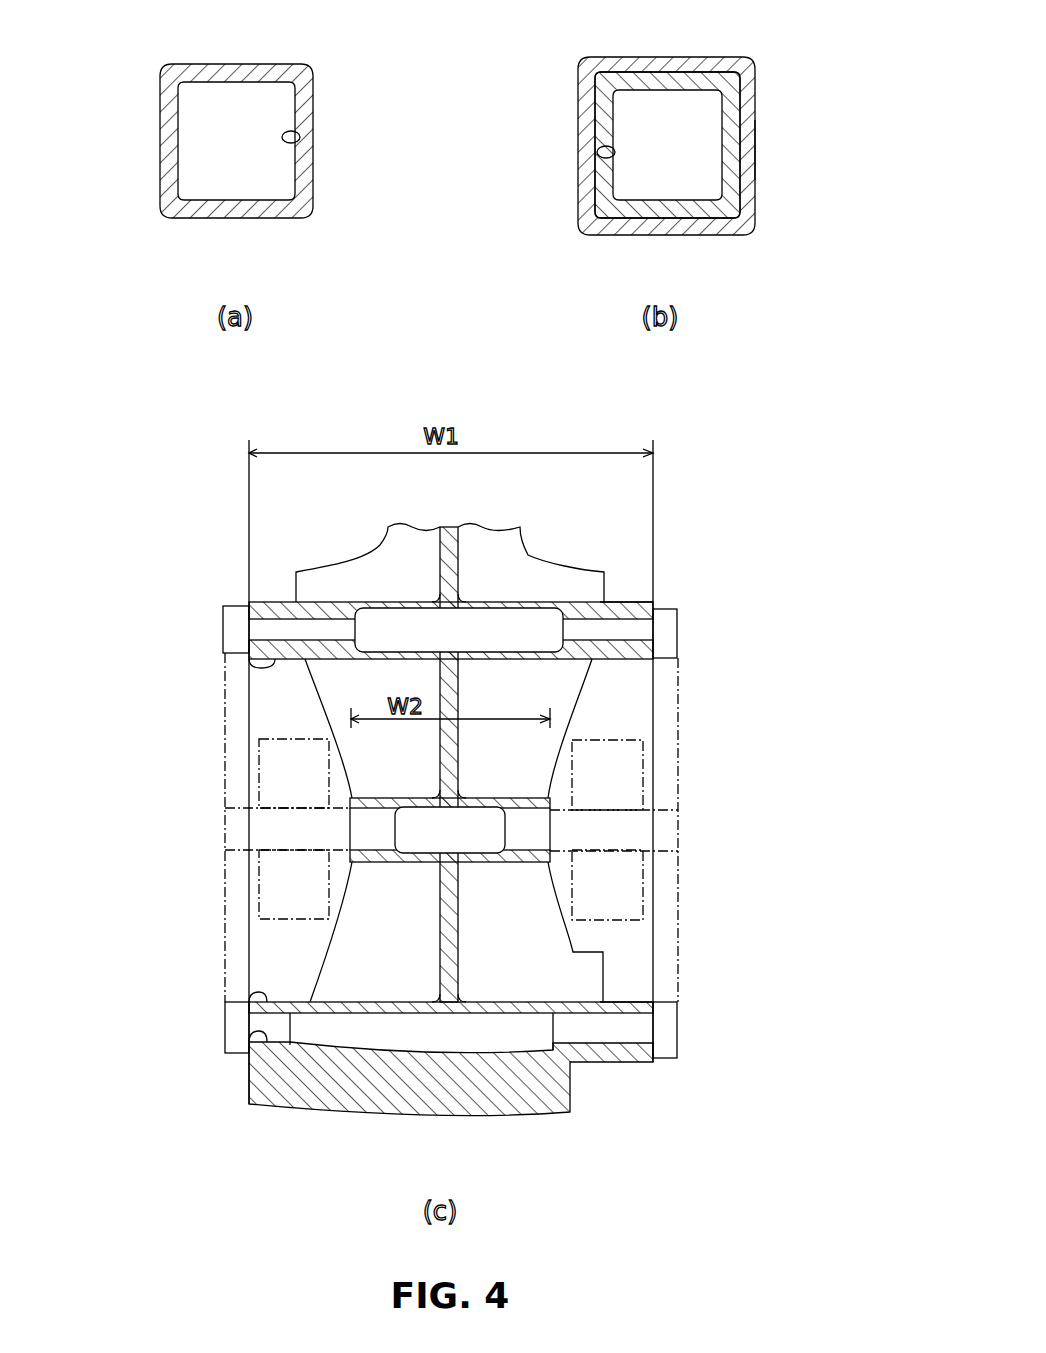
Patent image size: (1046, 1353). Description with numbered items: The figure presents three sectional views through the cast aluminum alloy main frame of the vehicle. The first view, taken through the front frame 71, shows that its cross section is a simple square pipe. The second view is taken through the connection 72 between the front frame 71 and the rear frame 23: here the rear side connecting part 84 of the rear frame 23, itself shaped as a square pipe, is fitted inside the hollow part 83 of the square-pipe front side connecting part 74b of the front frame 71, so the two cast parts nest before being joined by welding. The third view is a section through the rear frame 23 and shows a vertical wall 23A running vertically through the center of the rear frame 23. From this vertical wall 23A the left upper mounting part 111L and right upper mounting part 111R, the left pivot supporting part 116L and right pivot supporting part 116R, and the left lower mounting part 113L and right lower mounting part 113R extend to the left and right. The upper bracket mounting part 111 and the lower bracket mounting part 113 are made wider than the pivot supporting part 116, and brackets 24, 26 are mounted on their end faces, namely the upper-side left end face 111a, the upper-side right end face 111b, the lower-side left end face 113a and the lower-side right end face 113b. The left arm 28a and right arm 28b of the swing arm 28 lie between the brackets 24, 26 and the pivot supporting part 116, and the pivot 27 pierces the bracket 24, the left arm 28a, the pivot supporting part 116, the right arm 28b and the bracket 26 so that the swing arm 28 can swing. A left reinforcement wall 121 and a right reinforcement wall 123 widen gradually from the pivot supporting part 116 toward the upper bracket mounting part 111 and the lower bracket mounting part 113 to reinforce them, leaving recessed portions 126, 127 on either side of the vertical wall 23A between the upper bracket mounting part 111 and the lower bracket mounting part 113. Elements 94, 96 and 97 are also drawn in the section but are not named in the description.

The front frame 71 is at (232, 63).
The connection 72 is at (645, 55).
The front side connecting part 74b is at (693, 57).
The hollow part 83 is at (297, 135).
The rear side connecting part 84 is at (740, 172).
The rear frame 23 is at (292, 587).
The vertical wall 23A is at (437, 550).
The bracket 24 is at (225, 720).
The bracket 26 is at (678, 772).
The pivot 27 is at (243, 806).
The swing arm 28 is at (285, 735).
The left arm 28a is at (258, 889).
The right arm 28b is at (643, 873).
The middle spacer 94 is at (357, 842).
The upper elastic member 96 is at (272, 638).
The lower elastic member 97 is at (250, 1033).
The upper bracket mounting part 111 is at (618, 598).
The upper-side left end face 111a is at (247, 608).
The upper-side right end face 111b is at (678, 612).
The left upper mounting part 111L is at (250, 664).
The right upper mounting part 111R is at (627, 601).
The lower bracket mounting part 113 is at (613, 1001).
The lower-side left end face 113a is at (248, 1006).
The lower-side right end face 113b is at (677, 1020).
The left lower mounting part 113L is at (250, 992).
The right lower mounting part 113R is at (630, 1002).
The pivot supporting part 116 is at (520, 793).
The left pivot supporting part 116L is at (388, 797).
The right pivot supporting part 116R is at (497, 797).
The left reinforcement wall 121 is at (345, 946).
The right reinforcement wall 123 is at (547, 972).
The recessed portion 126 is at (385, 962).
The recessed portion 127 is at (487, 953).